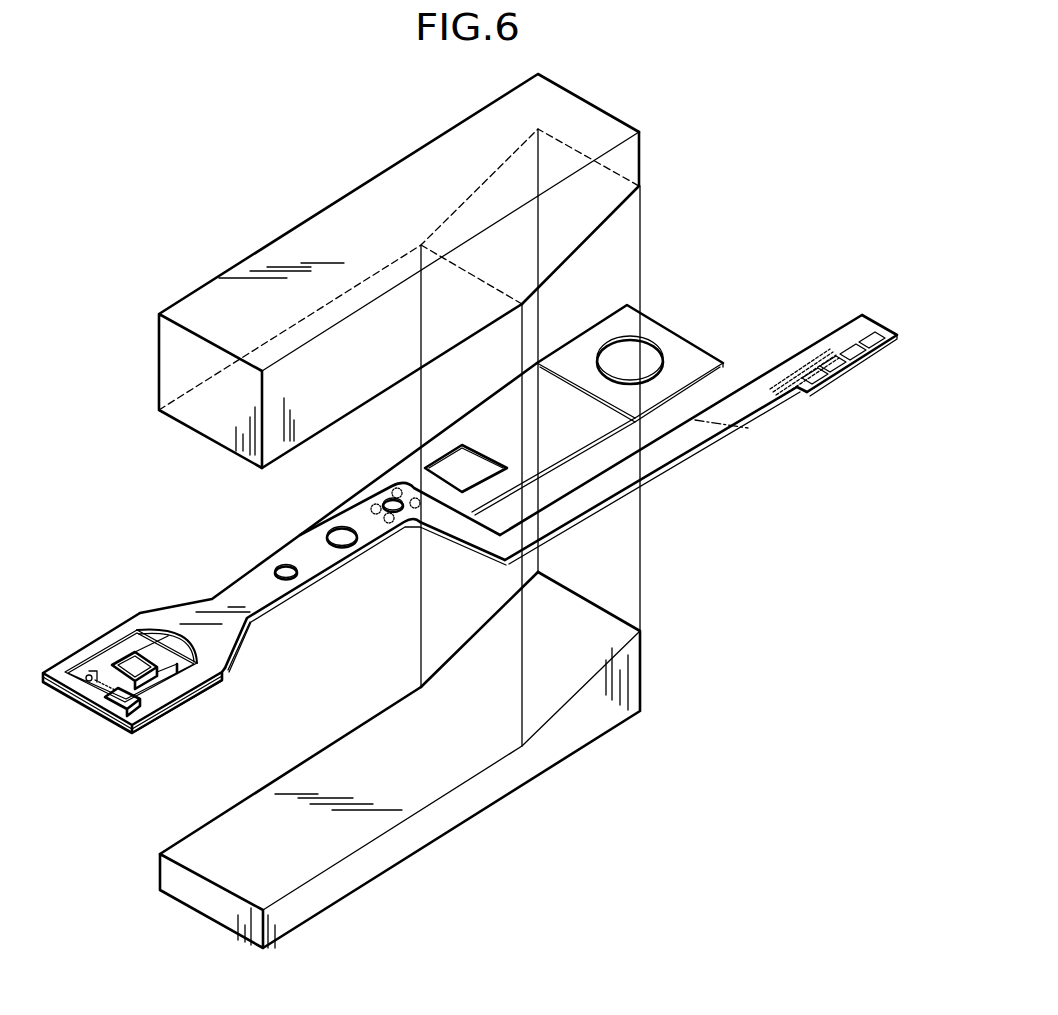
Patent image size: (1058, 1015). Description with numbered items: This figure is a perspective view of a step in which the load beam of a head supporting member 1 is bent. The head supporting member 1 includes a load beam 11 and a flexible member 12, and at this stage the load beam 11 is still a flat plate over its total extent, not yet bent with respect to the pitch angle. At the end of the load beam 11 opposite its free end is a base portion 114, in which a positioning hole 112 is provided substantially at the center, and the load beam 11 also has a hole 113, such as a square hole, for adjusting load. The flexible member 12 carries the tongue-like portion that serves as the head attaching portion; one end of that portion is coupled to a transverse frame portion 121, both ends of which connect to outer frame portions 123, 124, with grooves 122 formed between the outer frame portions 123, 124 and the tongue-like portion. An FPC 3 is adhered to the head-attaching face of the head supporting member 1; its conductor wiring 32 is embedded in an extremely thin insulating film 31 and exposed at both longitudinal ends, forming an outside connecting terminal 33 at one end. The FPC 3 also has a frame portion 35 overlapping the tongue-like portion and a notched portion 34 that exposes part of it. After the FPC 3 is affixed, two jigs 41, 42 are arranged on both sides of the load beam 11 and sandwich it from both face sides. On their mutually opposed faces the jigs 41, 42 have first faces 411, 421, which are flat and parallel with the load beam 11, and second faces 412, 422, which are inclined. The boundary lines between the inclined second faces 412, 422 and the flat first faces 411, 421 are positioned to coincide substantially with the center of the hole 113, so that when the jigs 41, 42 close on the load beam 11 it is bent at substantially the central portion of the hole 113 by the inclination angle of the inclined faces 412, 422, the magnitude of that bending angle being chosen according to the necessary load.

The head supporting member 1 is at (244, 554).
The FPC 3 is at (784, 422).
The load beam 11 is at (518, 413).
The flexible member 12 is at (317, 522).
The insulating film 31 is at (683, 458).
The conductor wiring 32 is at (808, 358).
The outside connecting terminal 33 is at (853, 324).
The notched portion 34 is at (142, 703).
The frame portion 35 is at (177, 674).
The jig 41 is at (399, 271).
The jig 42 is at (400, 760).
The positioning hole 112 is at (660, 360).
The hole 113 is at (453, 450).
The base portion 114 is at (712, 362).
The transverse frame portion 121 is at (68, 698).
The grooves 122 is at (148, 638).
The outer frame portion 123 is at (67, 657).
The outer frame portion 124 is at (207, 688).
The first face 411 is at (368, 405).
The second face 412 is at (600, 227).
The first face 421 is at (356, 737).
The second face 422 is at (471, 643).